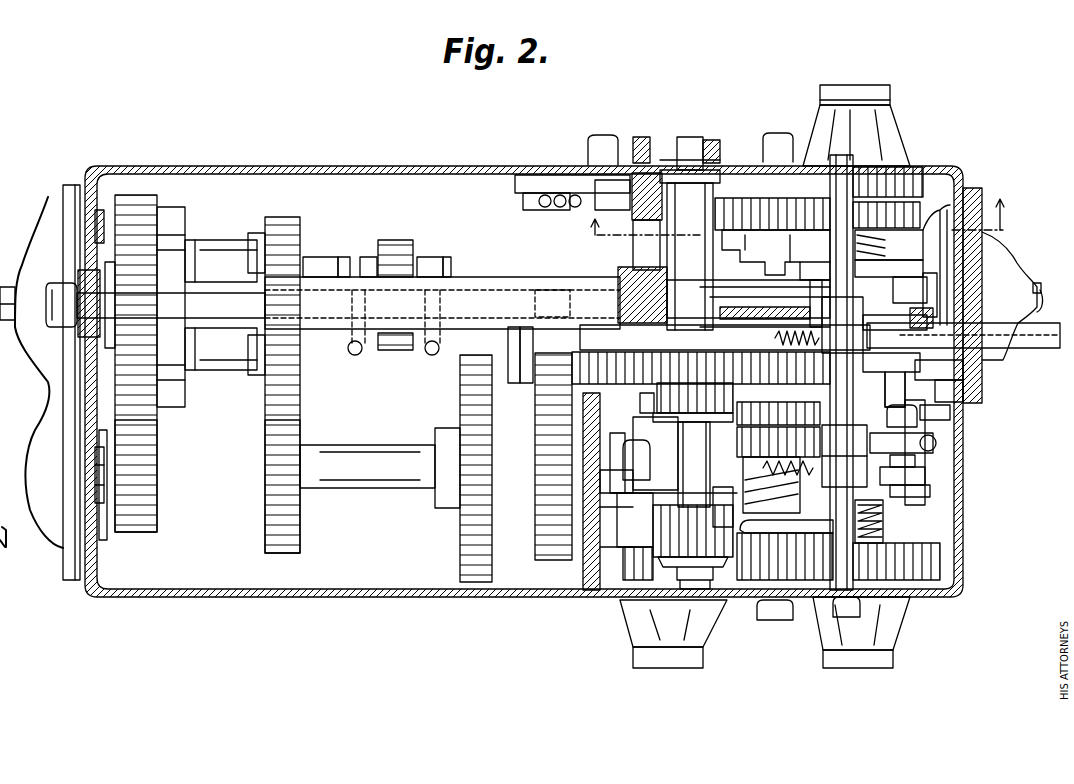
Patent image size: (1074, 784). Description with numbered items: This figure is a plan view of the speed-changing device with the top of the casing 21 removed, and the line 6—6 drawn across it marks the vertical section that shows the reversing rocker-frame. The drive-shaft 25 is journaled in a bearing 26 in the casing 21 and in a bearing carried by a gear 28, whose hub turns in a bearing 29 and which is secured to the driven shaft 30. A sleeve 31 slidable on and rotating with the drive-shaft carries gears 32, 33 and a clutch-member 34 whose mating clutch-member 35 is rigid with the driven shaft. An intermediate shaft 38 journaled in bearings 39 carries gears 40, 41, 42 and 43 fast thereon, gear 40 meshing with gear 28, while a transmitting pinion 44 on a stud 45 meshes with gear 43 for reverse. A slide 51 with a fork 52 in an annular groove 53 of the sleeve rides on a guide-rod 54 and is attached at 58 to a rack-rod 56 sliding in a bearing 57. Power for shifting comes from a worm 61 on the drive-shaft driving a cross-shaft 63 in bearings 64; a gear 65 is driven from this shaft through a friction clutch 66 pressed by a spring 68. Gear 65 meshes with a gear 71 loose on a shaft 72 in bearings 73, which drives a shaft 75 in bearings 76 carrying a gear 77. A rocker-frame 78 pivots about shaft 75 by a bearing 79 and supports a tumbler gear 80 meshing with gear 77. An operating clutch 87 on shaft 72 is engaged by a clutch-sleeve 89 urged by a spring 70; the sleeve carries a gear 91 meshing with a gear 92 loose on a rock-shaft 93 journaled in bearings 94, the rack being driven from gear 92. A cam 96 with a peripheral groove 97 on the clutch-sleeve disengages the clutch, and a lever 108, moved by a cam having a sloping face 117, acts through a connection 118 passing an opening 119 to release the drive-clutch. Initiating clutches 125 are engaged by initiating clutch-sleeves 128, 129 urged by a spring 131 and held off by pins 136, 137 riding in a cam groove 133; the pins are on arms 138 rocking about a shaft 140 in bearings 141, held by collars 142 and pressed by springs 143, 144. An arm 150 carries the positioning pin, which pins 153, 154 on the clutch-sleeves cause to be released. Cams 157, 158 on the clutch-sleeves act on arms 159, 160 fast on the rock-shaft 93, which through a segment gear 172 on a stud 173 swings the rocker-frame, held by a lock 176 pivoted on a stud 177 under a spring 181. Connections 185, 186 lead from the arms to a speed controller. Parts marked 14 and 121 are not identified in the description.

The section line 6 is at (636, 232).
The gear 14 is at (935, 566).
The casing 21 is at (203, 593).
The drive-shaft 25 is at (1037, 289).
The bearing 26 is at (1005, 262).
The gear 28 is at (135, 195).
The bearing 29 is at (37, 240).
The driven shaft 30 is at (38, 269).
The sleeve 31 is at (330, 276).
The gear 32 is at (278, 218).
The gear 33 is at (398, 242).
The clutch-member 34 is at (255, 235).
The clutch-member 35 is at (188, 260).
The intermediate shaft 38 is at (372, 468).
The bearing 39 is at (107, 537).
The gear 40 is at (147, 532).
The gear 41 is at (278, 547).
The gear 42 is at (463, 553).
The gear 43 is at (555, 553).
The transmitting pinion 44 is at (528, 377).
The stud 45 is at (505, 375).
The slide 51 is at (440, 255).
The fork 52 is at (365, 258).
The annular groove 53 is at (352, 258).
The guide-rod 54 is at (217, 303).
The rack-rod 56 is at (725, 337).
The bearing 57 is at (980, 338).
The attachment 58 is at (352, 356).
The worm 61 is at (625, 272).
The cross-shaft 63 is at (660, 602).
The bearing 64 is at (648, 140).
The gear 65 is at (647, 522).
The friction clutch 66 is at (612, 517).
The spring 68 is at (648, 400).
The spring 70 is at (760, 482).
The gear 71 is at (752, 555).
The shaft 72 is at (768, 622).
The bearing 73 is at (805, 603).
The shaft 75 is at (975, 200).
The bearing 76 is at (875, 125).
The gear 77 is at (943, 212).
The rocker-frame 78 is at (920, 210).
The bearing 79 is at (925, 180).
The gear 80 is at (747, 240).
The operating clutch 87 is at (762, 235).
The clutch-sleeve 89 is at (785, 203).
The gear 91 is at (800, 400).
The gear 92 is at (701, 355).
The rock-shaft 93 is at (690, 180).
The bearing 94 is at (713, 140).
The cam 96 is at (718, 395).
The peripheral groove 97 is at (713, 442).
The lever 108 is at (948, 412).
The sloping face 117 is at (889, 380).
The connection 118 is at (917, 370).
The opening 119 is at (940, 396).
The post 121 is at (881, 389).
The initiating clutch 125 is at (920, 430).
The initiating clutch-sleeve 128 is at (925, 466).
The initiating clutch-sleeve 129 is at (859, 372).
The spring 131 is at (896, 273).
The cam 133 is at (843, 325).
The pin 136 is at (844, 456).
The pin 137 is at (940, 318).
The arm 138 is at (844, 464).
The shaft 140 is at (843, 160).
The bearing 141 is at (883, 130).
The collar 142 is at (1005, 487).
The spring 143 is at (800, 456).
The spring 144 is at (783, 335).
The arm 150 is at (885, 515).
The pin 153 is at (930, 441).
The pin 154 is at (967, 232).
The cam 157 is at (925, 496).
The cam 158 is at (1050, 268).
The arm 159 is at (813, 600).
The arm 160 is at (803, 157).
The segment gear 172 is at (695, 183).
The stud 173 is at (800, 160).
The lock 176 is at (548, 190).
The stud 177 is at (605, 135).
The spring 181 is at (500, 175).
The connection 185 is at (980, 335).
The connection 186 is at (935, 446).